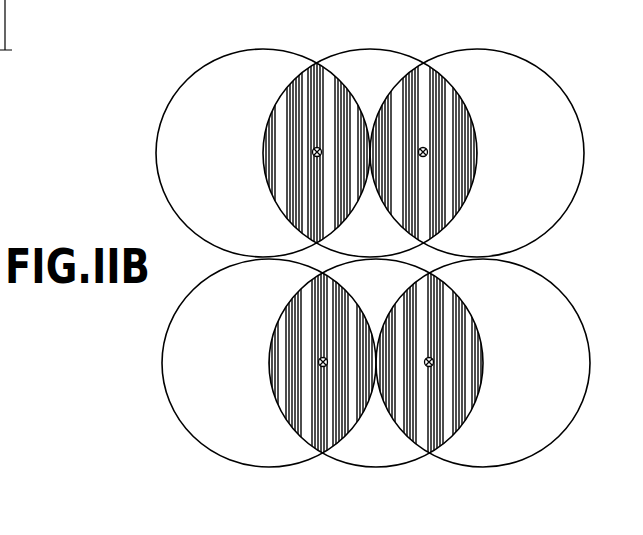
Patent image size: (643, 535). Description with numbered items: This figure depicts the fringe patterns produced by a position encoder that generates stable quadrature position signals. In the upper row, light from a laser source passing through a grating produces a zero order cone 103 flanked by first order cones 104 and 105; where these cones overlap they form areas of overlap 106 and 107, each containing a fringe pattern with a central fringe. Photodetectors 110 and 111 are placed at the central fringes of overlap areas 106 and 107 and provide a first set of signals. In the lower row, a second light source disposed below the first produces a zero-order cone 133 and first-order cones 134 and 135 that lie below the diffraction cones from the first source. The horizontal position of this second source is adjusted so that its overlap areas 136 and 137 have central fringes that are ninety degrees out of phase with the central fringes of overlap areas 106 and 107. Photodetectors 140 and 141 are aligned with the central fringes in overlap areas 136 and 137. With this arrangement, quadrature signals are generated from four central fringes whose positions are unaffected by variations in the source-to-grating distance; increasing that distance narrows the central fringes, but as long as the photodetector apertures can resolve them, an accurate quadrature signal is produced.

The zero order cone 103 is at (392, 48).
The first order cone 104 is at (279, 48).
The first order cone 105 is at (497, 48).
The area of overlap 106 is at (330, 78).
The area of overlap 107 is at (426, 70).
The photodetector 110 is at (312, 153).
The photodetector 111 is at (428, 152).
The zero-order cone 133 is at (370, 467).
The first-order cone 134 is at (267, 467).
The first-order cone 135 is at (490, 467).
The overlap area 136 is at (328, 432).
The overlap area 137 is at (427, 433).
The photodetector 140 is at (318, 362).
The photodetector 141 is at (434, 362).